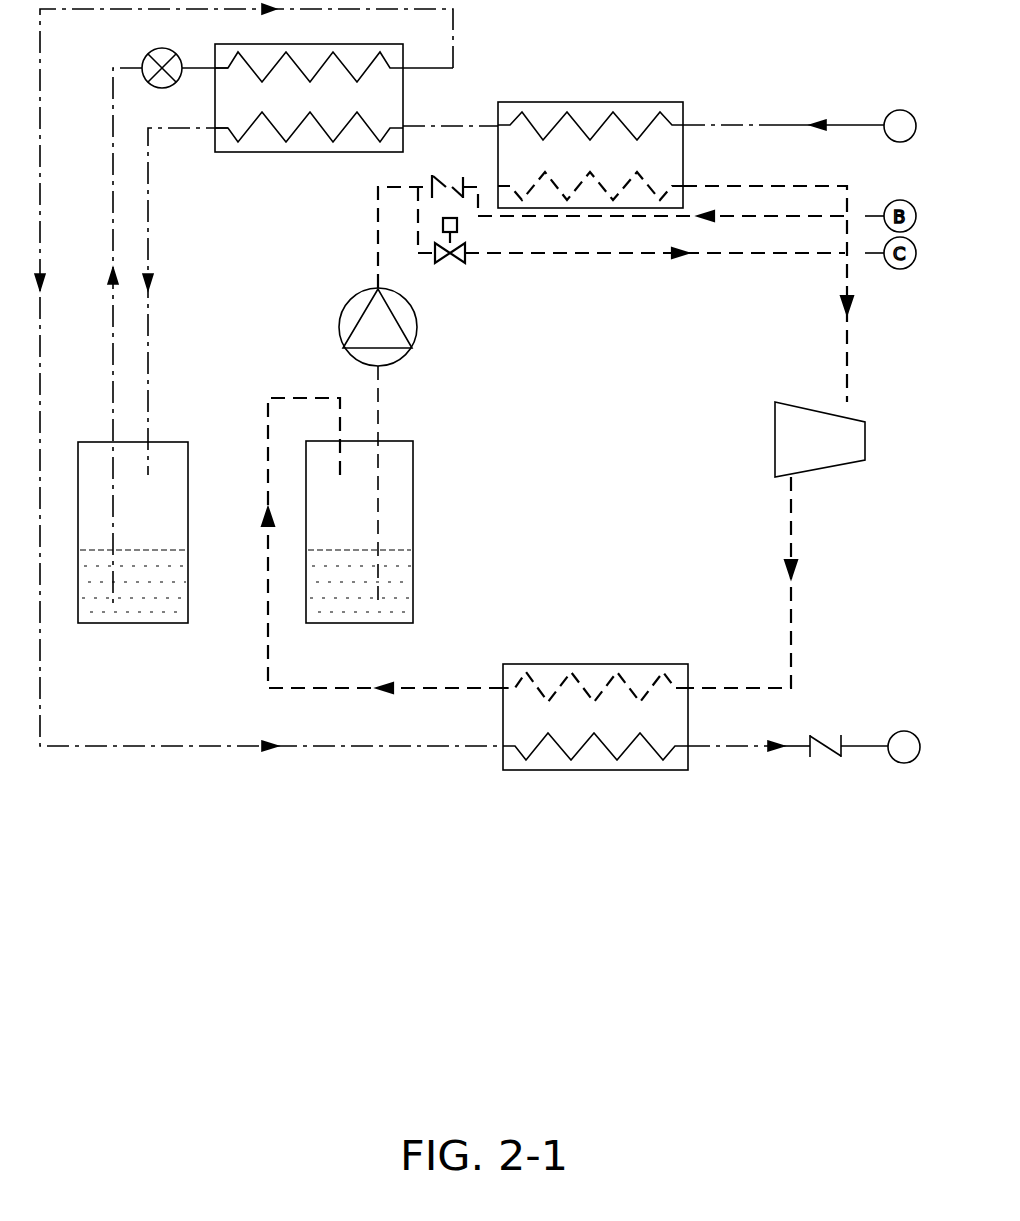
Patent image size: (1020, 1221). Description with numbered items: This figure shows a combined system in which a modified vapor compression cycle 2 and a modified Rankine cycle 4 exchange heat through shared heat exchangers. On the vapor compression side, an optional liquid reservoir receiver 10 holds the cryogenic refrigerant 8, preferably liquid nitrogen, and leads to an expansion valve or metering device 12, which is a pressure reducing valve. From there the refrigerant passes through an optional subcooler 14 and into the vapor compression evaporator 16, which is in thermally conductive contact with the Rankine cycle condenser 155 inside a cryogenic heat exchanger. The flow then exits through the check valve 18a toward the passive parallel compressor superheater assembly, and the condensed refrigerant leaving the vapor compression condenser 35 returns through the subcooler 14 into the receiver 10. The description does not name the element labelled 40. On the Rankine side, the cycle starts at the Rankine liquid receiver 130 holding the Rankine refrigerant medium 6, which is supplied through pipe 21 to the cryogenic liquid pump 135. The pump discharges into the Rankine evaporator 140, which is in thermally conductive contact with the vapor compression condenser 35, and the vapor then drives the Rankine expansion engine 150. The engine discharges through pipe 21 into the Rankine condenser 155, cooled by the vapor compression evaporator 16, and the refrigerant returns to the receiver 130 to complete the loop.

The vapor compression cycle 2 is at (128, 752).
The Rankine cycle 4 is at (777, 582).
The Rankine cycle refrigerant medium 6 is at (360, 605).
The vapor compression cryogenic refrigerant 8 is at (135, 612).
The vapor compression liquid reservoir receiver 10 is at (188, 442).
The vapor compression expansion valve/metering device 12 is at (162, 48).
The vapor compression subcooler 14 is at (403, 118).
The vapor compression evaporator 16 is at (630, 750).
The check valve 18a is at (812, 740).
The pipe 21 is at (113, 340).
The vapor compression condenser 35 is at (578, 125).
The oil line 40 is at (215, 128).
The Rankine cycle liquid receiver 130 is at (413, 480).
The Rankine cycle cryogenic liquid pump 135 is at (410, 356).
The Rankine cycle evaporator 140 is at (683, 170).
The Rankine cycle expansion engine 150 is at (775, 410).
The Rankine cycle condenser 155 is at (538, 695).